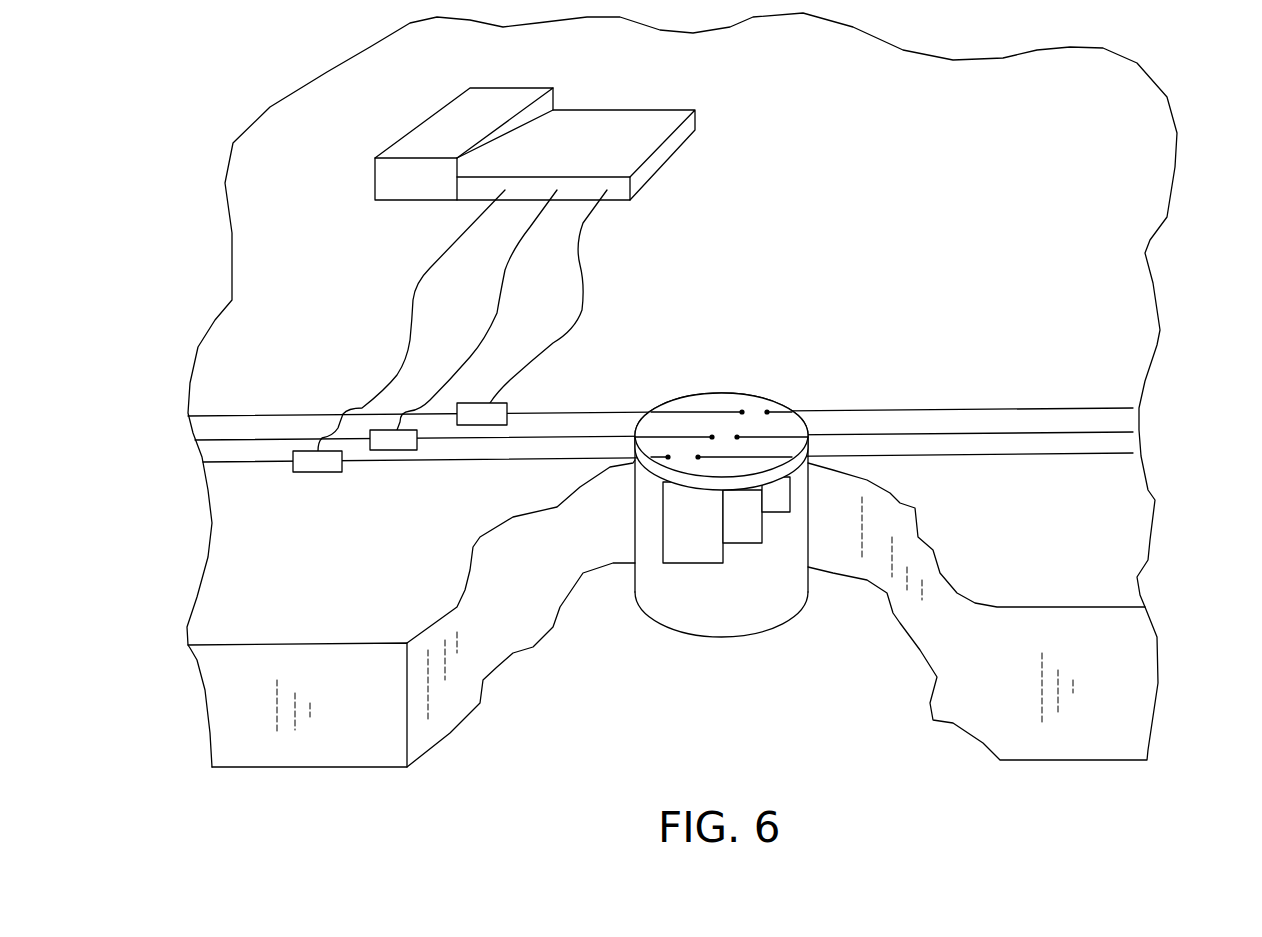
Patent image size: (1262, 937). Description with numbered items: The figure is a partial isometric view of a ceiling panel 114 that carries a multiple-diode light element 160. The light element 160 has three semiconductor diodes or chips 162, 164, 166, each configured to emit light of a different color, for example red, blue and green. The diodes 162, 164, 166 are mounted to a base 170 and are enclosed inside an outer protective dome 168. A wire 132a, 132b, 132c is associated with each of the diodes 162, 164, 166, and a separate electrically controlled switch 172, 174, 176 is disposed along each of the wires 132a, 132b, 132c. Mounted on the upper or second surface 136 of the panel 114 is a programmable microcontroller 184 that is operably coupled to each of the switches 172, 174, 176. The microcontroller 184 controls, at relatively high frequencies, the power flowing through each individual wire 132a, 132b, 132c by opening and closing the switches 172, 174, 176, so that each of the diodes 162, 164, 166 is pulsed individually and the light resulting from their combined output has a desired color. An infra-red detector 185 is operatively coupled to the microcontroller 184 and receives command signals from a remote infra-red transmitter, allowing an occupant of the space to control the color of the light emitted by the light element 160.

The panel 114 is at (1163, 89).
The second surface 136 is at (1026, 191).
The wire 132a is at (427, 462).
The wire 132b is at (500, 440).
The wire 132c is at (606, 413).
The programmable microcontroller 184 is at (629, 107).
The infra-red detector 185 is at (497, 87).
The electrically controlled switch 172 is at (318, 473).
The electrically controlled switch 174 is at (383, 451).
The electrically controlled switch 176 is at (507, 411).
The light element 160 is at (783, 630).
The semiconductor diode 162 is at (680, 563).
The semiconductor diode 164 is at (740, 544).
The semiconductor diode 166 is at (777, 513).
The protective dome 168 is at (810, 598).
The base 170 is at (758, 394).